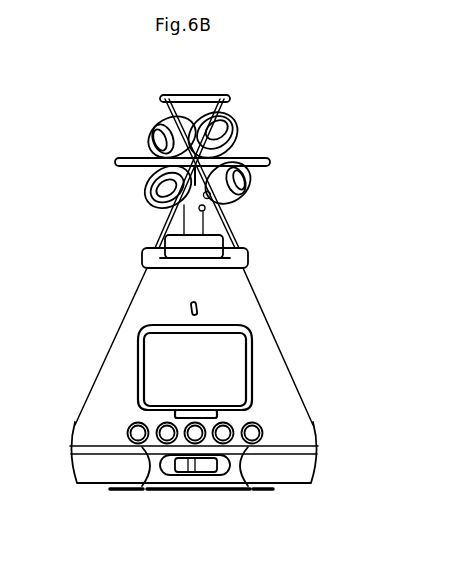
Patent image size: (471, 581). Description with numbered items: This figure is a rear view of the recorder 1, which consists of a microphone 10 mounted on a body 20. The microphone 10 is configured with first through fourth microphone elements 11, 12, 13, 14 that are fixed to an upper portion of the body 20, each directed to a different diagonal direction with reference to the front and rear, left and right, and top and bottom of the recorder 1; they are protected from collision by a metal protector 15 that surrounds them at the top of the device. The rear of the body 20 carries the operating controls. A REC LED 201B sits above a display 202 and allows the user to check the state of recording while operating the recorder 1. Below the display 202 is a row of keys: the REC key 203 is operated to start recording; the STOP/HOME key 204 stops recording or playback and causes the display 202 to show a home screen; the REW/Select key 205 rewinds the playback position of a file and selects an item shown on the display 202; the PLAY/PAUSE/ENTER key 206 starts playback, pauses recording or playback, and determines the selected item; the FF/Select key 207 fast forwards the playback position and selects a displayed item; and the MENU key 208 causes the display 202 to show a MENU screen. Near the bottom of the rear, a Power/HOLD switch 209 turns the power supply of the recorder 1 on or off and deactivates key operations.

The recorder 1 is at (198, 67).
The microphone 10 is at (245, 117).
The first microphone element 11 is at (150, 123).
The second microphone element 12 is at (242, 183).
The third microphone element 13 is at (145, 185).
The fourth microphone element 14 is at (240, 137).
The metal protector 15 is at (178, 98).
The body 20 is at (267, 312).
The REC LED 201B is at (189, 306).
The display 202 is at (151, 365).
The REC key 203 is at (225, 418).
The STOP/HOME key 204 is at (136, 428).
The REW/Select key 205 is at (166, 440).
The PLAY/PAUSE/ENTER key 206 is at (193, 440).
The FF/Select key 207 is at (212, 467).
The MENU key 208 is at (257, 425).
The Power/HOLD switch 209 is at (220, 490).